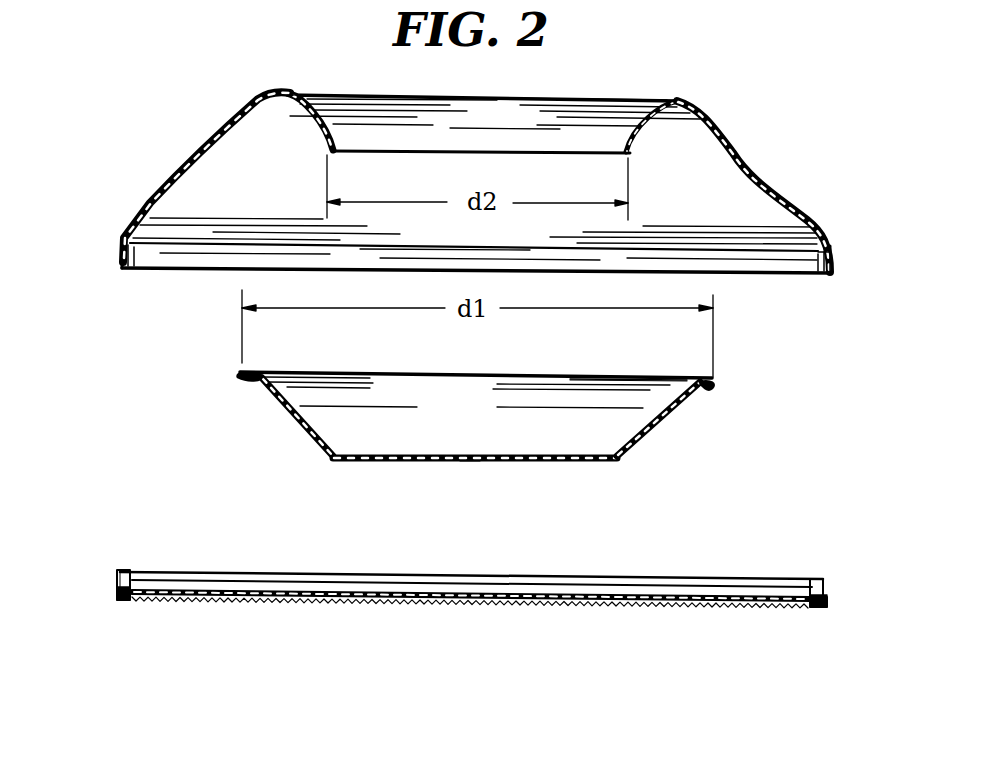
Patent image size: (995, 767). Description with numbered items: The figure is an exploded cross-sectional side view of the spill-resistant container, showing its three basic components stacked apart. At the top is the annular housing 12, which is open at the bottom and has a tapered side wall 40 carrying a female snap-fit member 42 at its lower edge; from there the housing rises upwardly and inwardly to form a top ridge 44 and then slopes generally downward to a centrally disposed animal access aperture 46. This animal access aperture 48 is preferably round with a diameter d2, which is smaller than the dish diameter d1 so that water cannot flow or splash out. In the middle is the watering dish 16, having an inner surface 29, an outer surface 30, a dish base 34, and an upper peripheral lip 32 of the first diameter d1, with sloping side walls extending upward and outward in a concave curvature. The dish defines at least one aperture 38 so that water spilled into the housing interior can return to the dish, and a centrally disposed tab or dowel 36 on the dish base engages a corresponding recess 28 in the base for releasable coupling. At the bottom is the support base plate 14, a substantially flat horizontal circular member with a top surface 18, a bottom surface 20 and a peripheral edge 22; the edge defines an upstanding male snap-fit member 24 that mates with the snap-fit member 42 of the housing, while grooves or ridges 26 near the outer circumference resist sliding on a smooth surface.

The annular housing 12 is at (170, 183).
The support base plate 14 is at (473, 603).
The watering dish 16 is at (514, 428).
The top surface 18 is at (540, 595).
The bottom surface 20 is at (577, 603).
The peripheral edge 22 is at (121, 599).
The male snap-fit member 24 is at (117, 563).
The grooves or ridges 26 is at (198, 605).
The recess 28 is at (473, 603).
The inner surface 29 is at (650, 408).
The outer surface 30 is at (642, 432).
The peripheral lip 32 is at (710, 387).
The dish base 34 is at (410, 462).
The tab or dowel 36 is at (473, 462).
The aperture 38 is at (326, 433).
The tapered side wall 40 is at (713, 112).
The female snap-fit member 42 is at (825, 275).
The top ridge 44 is at (272, 93).
The animal access aperture 46 is at (335, 152).
The animal access aperture 48 is at (565, 128).